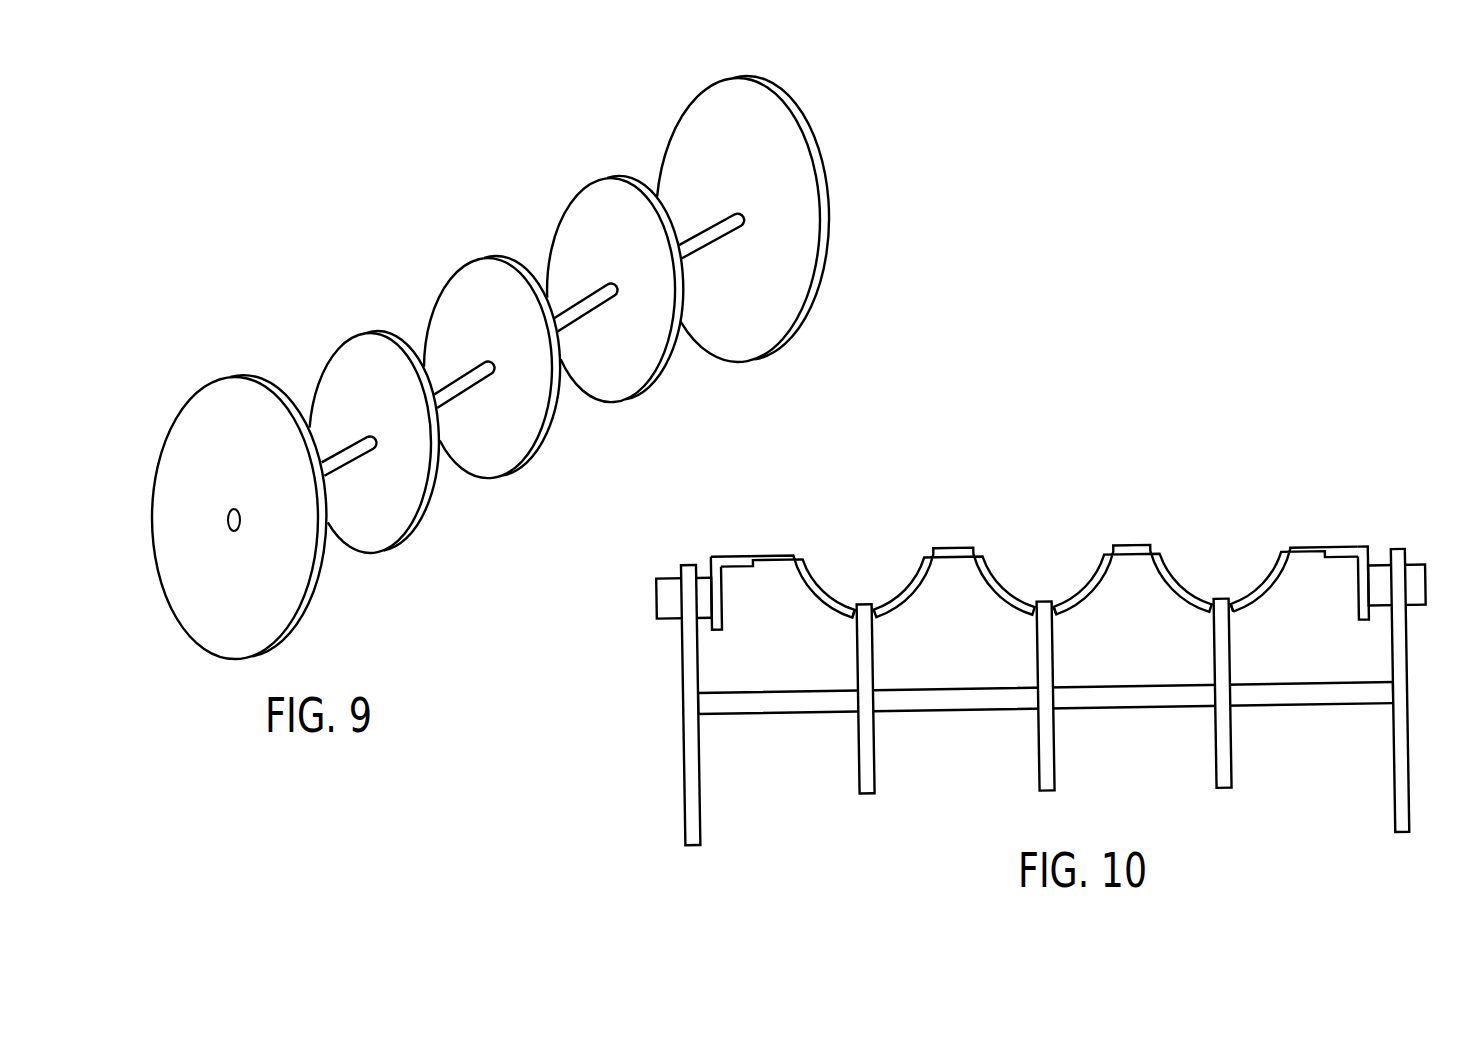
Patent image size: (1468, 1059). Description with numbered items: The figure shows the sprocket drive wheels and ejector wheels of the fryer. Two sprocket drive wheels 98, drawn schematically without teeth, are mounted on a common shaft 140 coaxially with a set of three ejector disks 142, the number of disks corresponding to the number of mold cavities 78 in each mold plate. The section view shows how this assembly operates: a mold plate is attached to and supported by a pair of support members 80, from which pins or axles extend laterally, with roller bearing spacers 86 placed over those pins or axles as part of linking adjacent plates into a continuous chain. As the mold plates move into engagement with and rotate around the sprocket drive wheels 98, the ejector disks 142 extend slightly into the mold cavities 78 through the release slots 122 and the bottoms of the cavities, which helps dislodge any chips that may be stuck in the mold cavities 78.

In FIG. 9, the sprocket drive wheel 98 is at (785, 246).
In FIG. 10, the sprocket drive wheel 98 is at (688, 803).
In FIG. 9, the shaft 140 is at (352, 446).
In FIG. 10, the shaft 140 is at (755, 704).
In FIG. 9, the ejector disk 142 is at (357, 362).
In FIG. 10, the ejector disk 142 is at (869, 778).
In FIG. 10, the mold cavity 78 is at (905, 570).
In FIG. 10, the release slot 122 is at (853, 608).
In FIG. 10, the support member 80 is at (722, 598).
In FIG. 10, the roller bearing spacer 86 is at (675, 593).